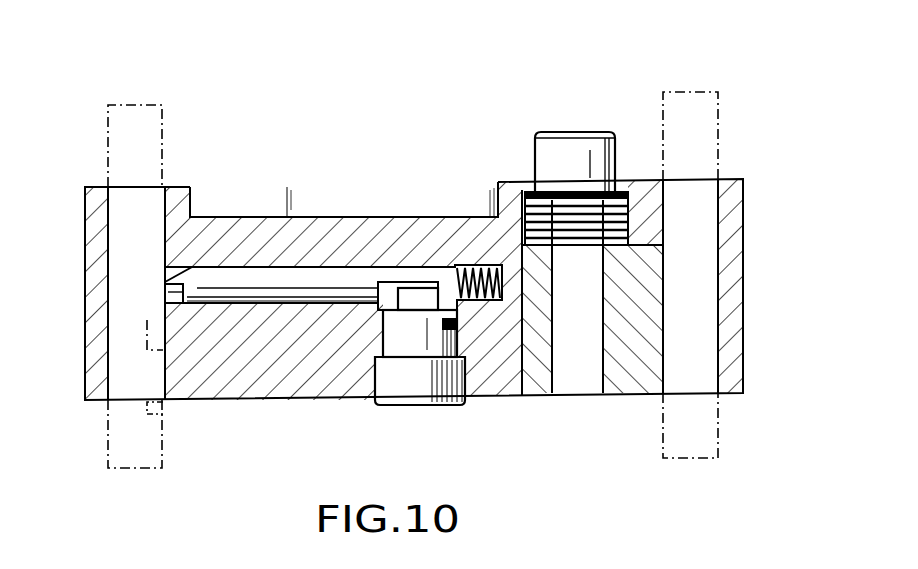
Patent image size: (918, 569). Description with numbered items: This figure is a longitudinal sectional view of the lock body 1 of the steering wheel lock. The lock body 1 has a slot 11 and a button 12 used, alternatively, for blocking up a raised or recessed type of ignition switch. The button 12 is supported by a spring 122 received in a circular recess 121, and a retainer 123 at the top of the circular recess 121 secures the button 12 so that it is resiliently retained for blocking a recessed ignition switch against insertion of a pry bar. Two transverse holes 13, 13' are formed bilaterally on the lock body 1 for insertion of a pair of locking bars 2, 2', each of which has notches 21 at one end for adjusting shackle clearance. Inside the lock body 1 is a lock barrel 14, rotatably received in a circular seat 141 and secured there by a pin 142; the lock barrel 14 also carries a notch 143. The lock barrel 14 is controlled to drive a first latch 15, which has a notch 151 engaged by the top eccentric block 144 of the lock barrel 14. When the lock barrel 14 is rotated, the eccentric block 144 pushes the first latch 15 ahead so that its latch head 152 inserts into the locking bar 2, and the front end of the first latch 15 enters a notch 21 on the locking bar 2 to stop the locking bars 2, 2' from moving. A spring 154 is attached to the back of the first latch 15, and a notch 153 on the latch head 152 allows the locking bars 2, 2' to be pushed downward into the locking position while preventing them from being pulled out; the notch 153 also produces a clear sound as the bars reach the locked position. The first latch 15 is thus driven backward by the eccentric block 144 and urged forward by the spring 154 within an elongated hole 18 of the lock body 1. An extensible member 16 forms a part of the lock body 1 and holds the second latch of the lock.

The lock body 1 is at (276, 400).
The locking bar 2 is at (152, 267).
The locking bar 2' is at (690, 243).
The slot 11 is at (226, 200).
The button 12 is at (589, 216).
The circular recess 121 is at (528, 198).
The spring 122 is at (614, 200).
The retainer 123 is at (553, 192).
The transverse hole 13 is at (95, 264).
The transverse hole 13' is at (727, 256).
The lock barrel 14 is at (421, 301).
The circular seat 141 is at (352, 403).
The pin 142 is at (455, 326).
The notch 143 is at (438, 406).
The eccentric block 144 is at (413, 287).
The first latch 15 is at (206, 295).
The notch 151 is at (383, 290).
The latch head 152 is at (163, 286).
The notch 153 is at (165, 293).
The spring 154 is at (466, 268).
The extensible member 16 is at (740, 257).
The elongated hole 18 is at (165, 281).
The notch 21 is at (168, 406).